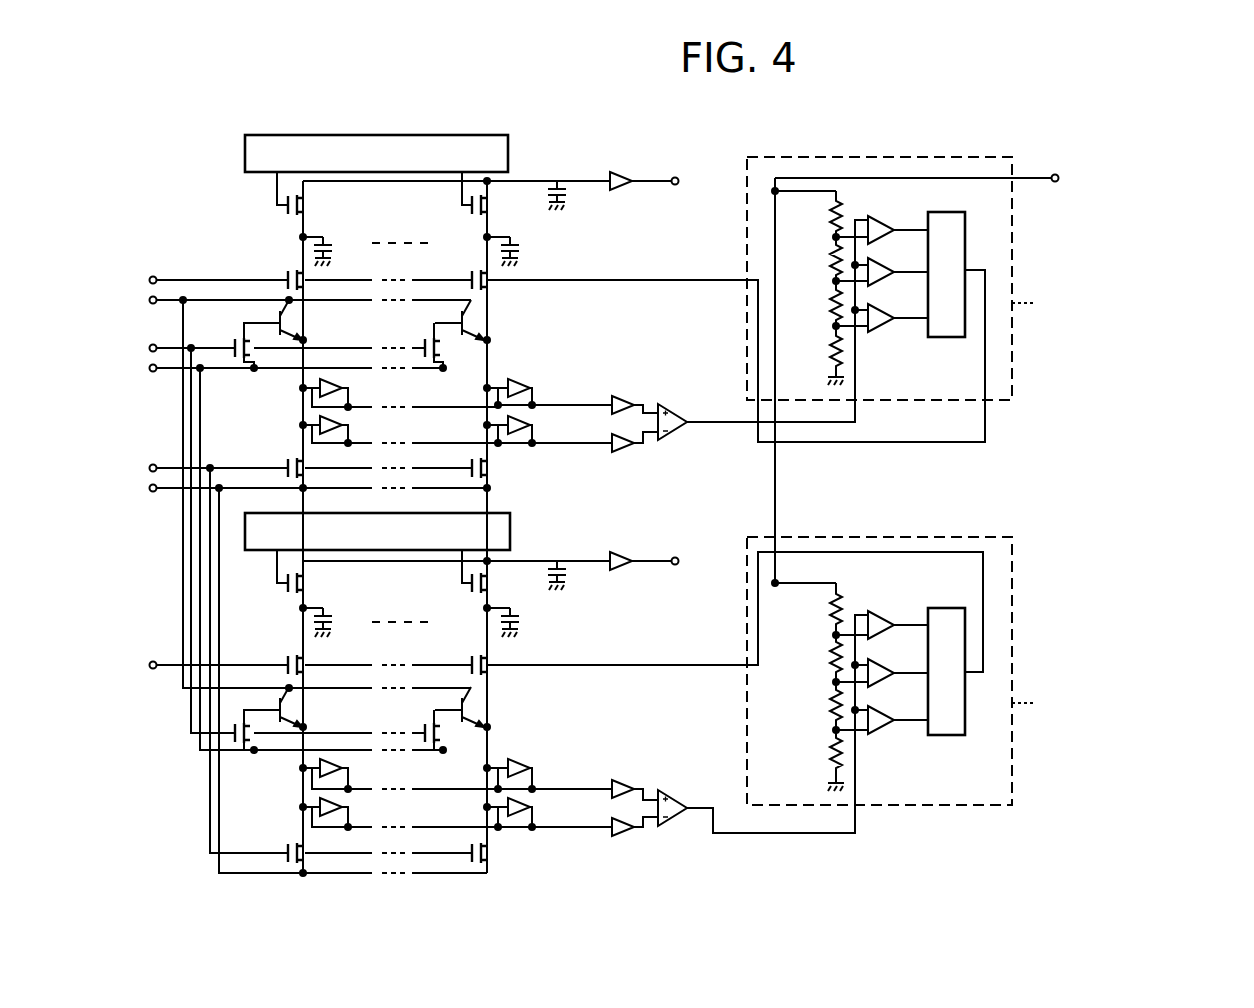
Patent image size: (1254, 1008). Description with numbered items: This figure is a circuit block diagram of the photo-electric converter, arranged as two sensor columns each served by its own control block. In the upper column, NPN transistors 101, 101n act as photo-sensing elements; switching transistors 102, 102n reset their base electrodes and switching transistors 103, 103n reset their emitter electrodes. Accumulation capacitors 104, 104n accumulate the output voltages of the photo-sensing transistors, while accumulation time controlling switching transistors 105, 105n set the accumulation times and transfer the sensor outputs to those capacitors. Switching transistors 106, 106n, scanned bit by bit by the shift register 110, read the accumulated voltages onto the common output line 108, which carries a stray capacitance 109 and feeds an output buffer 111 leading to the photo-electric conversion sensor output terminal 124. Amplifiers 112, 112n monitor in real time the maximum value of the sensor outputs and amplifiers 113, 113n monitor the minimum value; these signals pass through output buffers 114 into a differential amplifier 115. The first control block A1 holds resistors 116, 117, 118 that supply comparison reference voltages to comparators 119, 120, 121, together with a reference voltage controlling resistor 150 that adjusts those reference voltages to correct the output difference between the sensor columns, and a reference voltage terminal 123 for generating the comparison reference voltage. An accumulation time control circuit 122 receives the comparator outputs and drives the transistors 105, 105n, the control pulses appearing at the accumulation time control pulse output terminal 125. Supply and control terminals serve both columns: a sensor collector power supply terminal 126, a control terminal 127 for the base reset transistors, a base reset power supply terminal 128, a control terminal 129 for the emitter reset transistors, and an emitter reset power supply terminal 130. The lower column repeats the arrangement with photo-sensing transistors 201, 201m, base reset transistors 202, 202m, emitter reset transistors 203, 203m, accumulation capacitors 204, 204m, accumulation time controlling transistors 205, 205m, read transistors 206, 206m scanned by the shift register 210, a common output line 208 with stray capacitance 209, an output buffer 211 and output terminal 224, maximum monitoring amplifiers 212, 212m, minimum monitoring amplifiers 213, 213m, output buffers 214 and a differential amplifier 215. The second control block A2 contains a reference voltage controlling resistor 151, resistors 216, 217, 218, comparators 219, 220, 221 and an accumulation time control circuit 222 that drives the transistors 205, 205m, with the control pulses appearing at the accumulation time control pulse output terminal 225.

The shift register 110 is at (481, 135).
The common output line 108 is at (420, 184).
The switching transistor 106 is at (303, 208).
The switching transistor 106n is at (492, 200).
The photo-electric conversion sensor output terminal 124 is at (610, 179).
The output buffer 111 is at (618, 172).
The stray capacitance 109 is at (576, 208).
The accumulation capacitor 104 is at (335, 255).
The accumulation capacitor 104n is at (523, 255).
The accumulation time controlling switching transistor 105 is at (287, 277).
The accumulation time controlling switching transistor 105n is at (472, 277).
The accumulation time control pulse output terminal 125 is at (283, 280).
The sensor collector power supply terminal 126 is at (283, 299).
The control terminal 127 is at (260, 347).
The base reset power supply terminal 128 is at (269, 367).
The control terminal 129 is at (283, 467).
The emitter reset power supply terminal 130 is at (291, 487).
The NPN transistor 101 is at (307, 326).
The NPN transistor 101n is at (486, 326).
The switching transistor 102 is at (244, 342).
The switching transistor 102n is at (432, 342).
The amplifier 112 is at (344, 388).
The amplifier 113 is at (344, 425).
The amplifier 112n is at (530, 388).
The amplifier 113n is at (530, 426).
The output buffer 114 is at (628, 398).
The differential amplifier 115 is at (675, 414).
The switching transistor 103 is at (288, 466).
The switching transistor 103n is at (494, 469).
The control block A1 is at (947, 278).
The reference voltage terminal 123 is at (942, 176).
The reference voltage controlling resistor 150 is at (827, 212).
The resistor 116 is at (827, 256).
The resistor 117 is at (827, 299).
The resistor 118 is at (827, 341).
The comparator 119 is at (881, 221).
The comparator 120 is at (898, 260).
The comparator 121 is at (898, 304).
The accumulation time control circuit 122 is at (950, 212).
The shift register 210 is at (514, 520).
The common output line 208 is at (420, 564).
The switching transistor 206 is at (303, 585).
The switching transistor 206m is at (492, 578).
The photo-electric conversion sensor output terminal 224 is at (611, 561).
The output buffer 211 is at (630, 554).
The stray capacitance 209 is at (576, 585).
The accumulation capacitor 204 is at (302, 616).
The accumulation capacitor 204m is at (532, 628).
The accumulation time controlling switching transistor 205 is at (287, 667).
The accumulation time controlling switching transistor 205m is at (473, 667).
The accumulation time control pulse output terminal 225 is at (155, 654).
The NPN transistor 201 is at (307, 710).
The NPN transistor 201m is at (486, 700).
The switching transistor 202 is at (238, 752).
The switching transistor 202m is at (448, 733).
The amplifier 212 is at (344, 769).
The amplifier 213 is at (344, 808).
The amplifier 212m is at (531, 764).
The amplifier 213m is at (531, 808).
The output buffer 214 is at (628, 778).
The differential amplifier 215 is at (676, 802).
The switching transistor 203 is at (287, 844).
The switching transistor 203m is at (499, 859).
The control block A2 is at (947, 671).
The reference voltage controlling resistor 151 is at (827, 622).
The resistor 216 is at (827, 663).
The resistor 217 is at (827, 705).
The resistor 218 is at (827, 745).
The comparator 219 is at (881, 608).
The comparator 220 is at (896, 673).
The comparator 221 is at (882, 734).
The accumulation time control circuit 222 is at (945, 604).